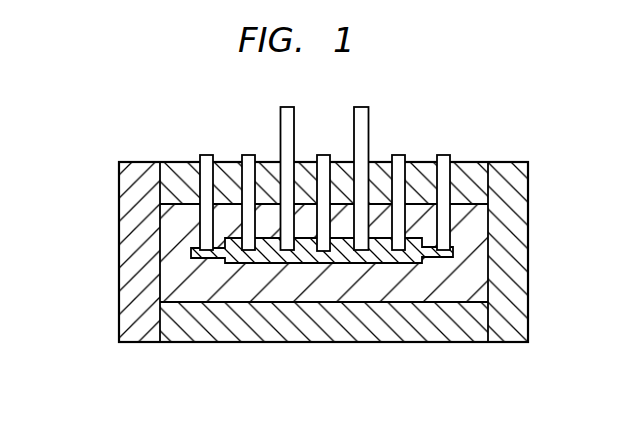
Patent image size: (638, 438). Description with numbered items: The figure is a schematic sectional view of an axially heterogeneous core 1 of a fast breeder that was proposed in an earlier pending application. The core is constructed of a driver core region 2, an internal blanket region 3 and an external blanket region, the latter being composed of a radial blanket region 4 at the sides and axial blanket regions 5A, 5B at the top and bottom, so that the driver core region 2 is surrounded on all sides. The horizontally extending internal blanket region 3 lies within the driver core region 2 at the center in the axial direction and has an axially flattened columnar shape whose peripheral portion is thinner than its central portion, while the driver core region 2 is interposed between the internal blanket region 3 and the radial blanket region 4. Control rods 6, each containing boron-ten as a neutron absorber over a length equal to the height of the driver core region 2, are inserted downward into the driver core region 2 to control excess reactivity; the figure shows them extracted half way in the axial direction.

The axially heterogeneous core 1 is at (120, 213).
The driver core region 2 is at (170, 277).
The internal blanket region 3 is at (342, 253).
The radial blanket region 4 is at (128, 315).
The axial blanket region 5A is at (182, 178).
The axial blanket region 5B is at (267, 332).
The control rod 6 is at (363, 133).